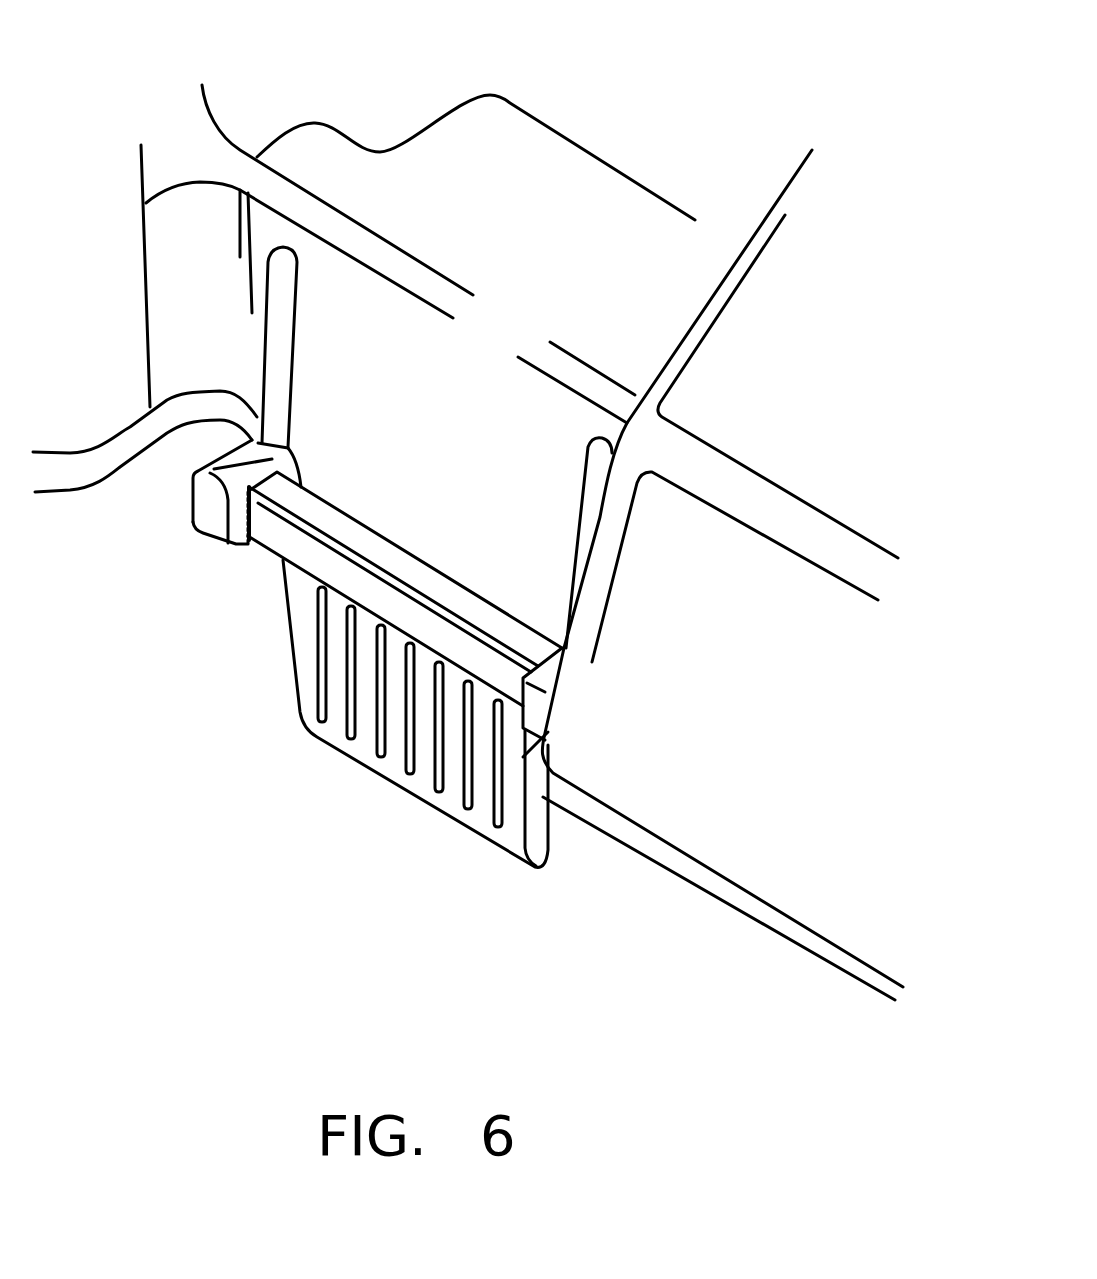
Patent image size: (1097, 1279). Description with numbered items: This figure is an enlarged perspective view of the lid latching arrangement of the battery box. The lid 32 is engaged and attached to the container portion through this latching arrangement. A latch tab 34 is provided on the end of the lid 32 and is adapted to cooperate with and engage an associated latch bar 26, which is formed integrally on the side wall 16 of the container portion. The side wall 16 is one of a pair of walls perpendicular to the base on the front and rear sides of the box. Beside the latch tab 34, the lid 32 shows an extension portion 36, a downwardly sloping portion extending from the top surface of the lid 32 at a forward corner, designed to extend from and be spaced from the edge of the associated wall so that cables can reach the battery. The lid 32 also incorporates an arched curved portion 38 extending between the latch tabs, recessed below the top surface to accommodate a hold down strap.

The side wall 16 is at (265, 788).
The latch bar 26 is at (297, 555).
The lid 32 is at (370, 100).
The latch tab 34 is at (440, 768).
The extension portion 36 is at (760, 733).
The curved portion 38 is at (585, 220).